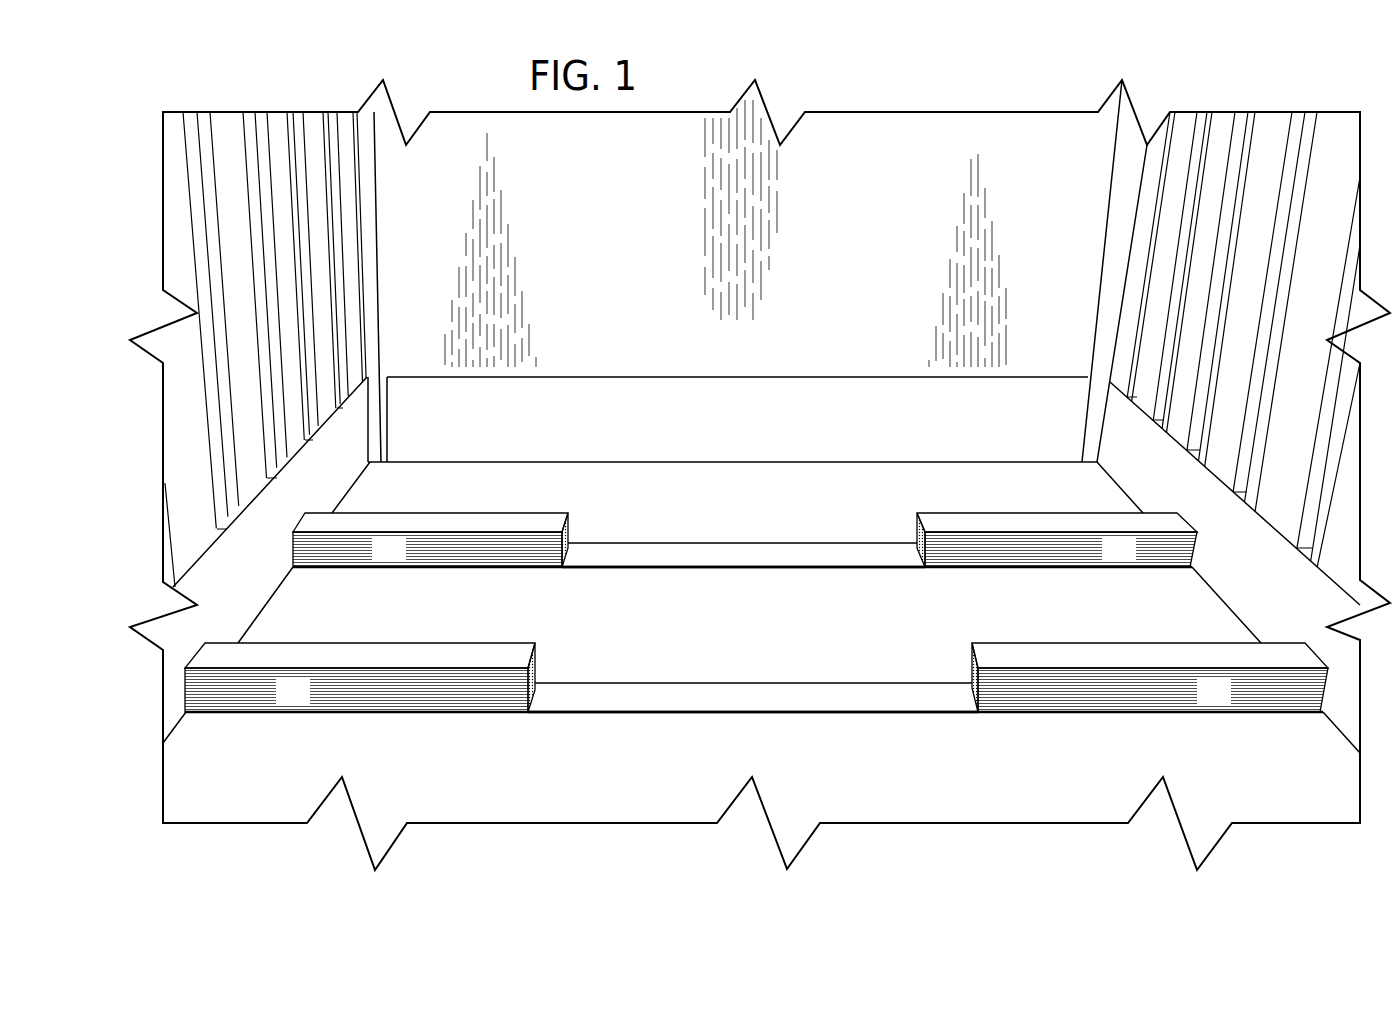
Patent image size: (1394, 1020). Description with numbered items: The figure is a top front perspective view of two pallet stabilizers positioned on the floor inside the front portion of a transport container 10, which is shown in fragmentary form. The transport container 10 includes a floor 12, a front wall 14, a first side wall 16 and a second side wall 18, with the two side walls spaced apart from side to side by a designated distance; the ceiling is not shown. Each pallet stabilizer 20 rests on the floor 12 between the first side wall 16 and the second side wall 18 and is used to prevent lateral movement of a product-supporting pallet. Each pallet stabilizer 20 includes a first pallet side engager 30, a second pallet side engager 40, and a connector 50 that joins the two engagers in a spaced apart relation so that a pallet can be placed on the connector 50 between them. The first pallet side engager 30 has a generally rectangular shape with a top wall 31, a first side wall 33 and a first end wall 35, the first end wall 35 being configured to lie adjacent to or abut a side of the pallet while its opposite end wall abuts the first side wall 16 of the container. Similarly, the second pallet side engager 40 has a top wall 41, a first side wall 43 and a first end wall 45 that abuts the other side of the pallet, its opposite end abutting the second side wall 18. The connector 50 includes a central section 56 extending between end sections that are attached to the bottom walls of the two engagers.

The transport container 10 is at (906, 112).
The floor 12 is at (213, 799).
The front wall 14 is at (445, 207).
The first side wall 16 is at (245, 232).
The second side wall 18 is at (1331, 264).
The pallet stabilizer 20 is at (402, 497).
The first pallet side engager 30 is at (407, 588).
The top wall 31 is at (452, 523).
The first side wall 33 is at (401, 560).
The first end wall 35 is at (568, 540).
The second pallet side engager 40 is at (1091, 588).
The top wall 41 is at (1050, 523).
The first side wall 43 is at (1131, 560).
The first end wall 45 is at (917, 540).
The connector 50 is at (753, 601).
The central section 56 is at (786, 552).